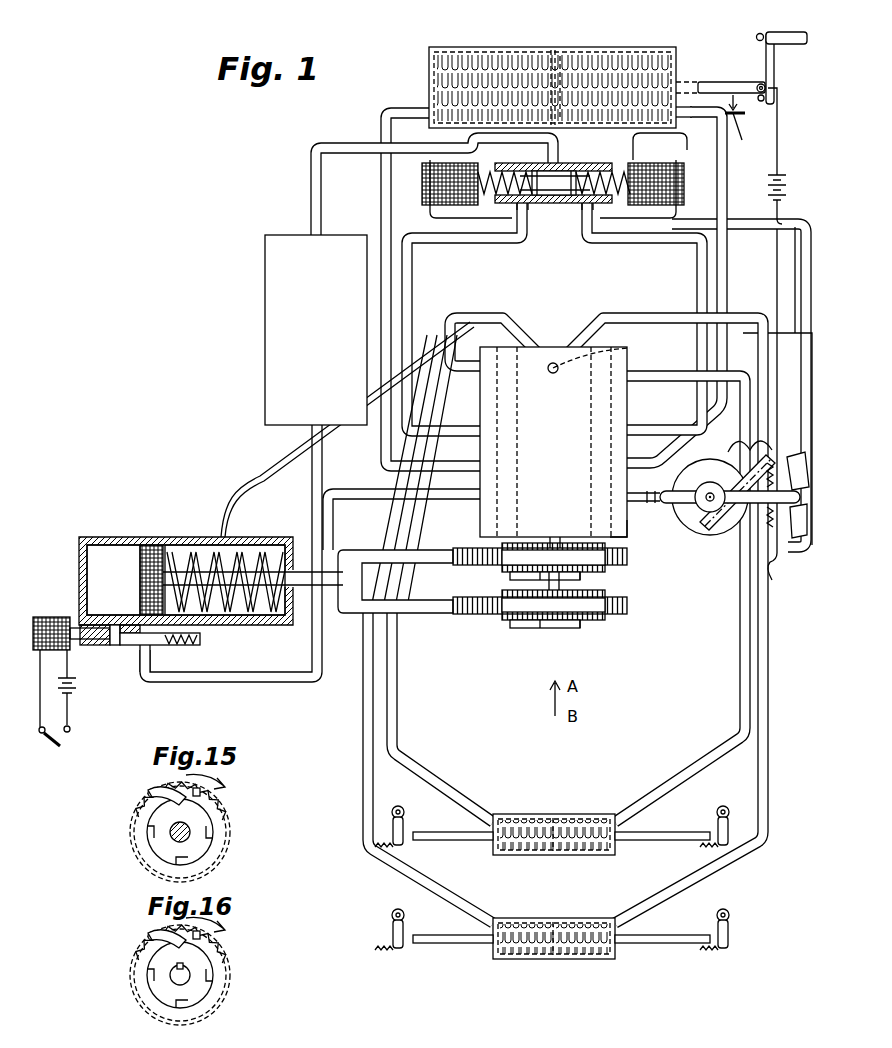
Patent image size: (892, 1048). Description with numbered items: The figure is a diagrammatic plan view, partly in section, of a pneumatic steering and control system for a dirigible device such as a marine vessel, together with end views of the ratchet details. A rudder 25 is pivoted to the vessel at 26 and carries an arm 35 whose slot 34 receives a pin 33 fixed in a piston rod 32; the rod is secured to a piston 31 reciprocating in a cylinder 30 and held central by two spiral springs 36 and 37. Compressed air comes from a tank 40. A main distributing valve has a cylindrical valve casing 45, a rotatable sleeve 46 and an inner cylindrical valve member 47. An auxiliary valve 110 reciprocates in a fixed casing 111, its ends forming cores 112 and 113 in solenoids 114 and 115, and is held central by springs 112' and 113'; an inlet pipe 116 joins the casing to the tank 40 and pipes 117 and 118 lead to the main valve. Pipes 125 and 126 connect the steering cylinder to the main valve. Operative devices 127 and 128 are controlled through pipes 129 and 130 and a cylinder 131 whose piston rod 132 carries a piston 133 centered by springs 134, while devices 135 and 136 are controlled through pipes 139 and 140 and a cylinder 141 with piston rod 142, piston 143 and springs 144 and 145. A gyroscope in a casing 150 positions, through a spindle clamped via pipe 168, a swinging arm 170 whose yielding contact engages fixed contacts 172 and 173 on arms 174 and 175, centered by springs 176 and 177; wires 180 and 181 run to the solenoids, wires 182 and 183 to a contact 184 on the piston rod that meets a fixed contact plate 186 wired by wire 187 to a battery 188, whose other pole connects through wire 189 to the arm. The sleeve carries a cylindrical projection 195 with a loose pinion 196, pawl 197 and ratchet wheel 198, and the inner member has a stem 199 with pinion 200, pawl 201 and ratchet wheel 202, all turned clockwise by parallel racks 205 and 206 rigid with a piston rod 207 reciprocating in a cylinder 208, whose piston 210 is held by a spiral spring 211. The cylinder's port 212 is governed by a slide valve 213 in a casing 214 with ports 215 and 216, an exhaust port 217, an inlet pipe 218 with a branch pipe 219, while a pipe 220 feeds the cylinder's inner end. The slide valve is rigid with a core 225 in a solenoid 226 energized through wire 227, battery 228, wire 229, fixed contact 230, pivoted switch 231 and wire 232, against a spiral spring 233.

In FIG. 1, the rudder 25 is at (790, 32).
In FIG. 1, the pivot 26 is at (758, 34).
In FIG. 1, the cylinder 30 is at (597, 55).
In FIG. 1, the piston 31 is at (553, 55).
In FIG. 1, the piston rod 32 is at (712, 82).
In FIG. 1, the pin 33 is at (766, 88).
In FIG. 1, the slot 34 is at (765, 100).
In FIG. 1, the arm 35 is at (774, 63).
In FIG. 1, the spiral spring 36 is at (490, 60).
In FIG. 1, the spiral spring 37 is at (632, 65).
In FIG. 1, the tank 40 is at (316, 330).
In FIG. 1, the valve casing 45 is at (630, 532).
In FIG. 1, the sleeve 46 is at (630, 403).
In FIG. 1, the inner cylindrical valve member 47 is at (603, 352).
In FIG. 1, the auxiliary valve 110 is at (553, 185).
In FIG. 1, the auxiliary valve casing 111 is at (565, 172).
In FIG. 1, the core 112 is at (483, 211).
In FIG. 1, the spring 112' is at (503, 196).
In FIG. 1, the core 113 is at (606, 164).
In FIG. 1, the spring 113' is at (619, 209).
In FIG. 1, the solenoid 114 is at (430, 180).
In FIG. 1, the solenoid 115 is at (684, 178).
In FIG. 1, the inlet pipe 116 is at (392, 152).
In FIG. 1, the pipe 117 is at (470, 240).
In FIG. 1, the pipe 118 is at (630, 240).
In FIG. 1, the pipe 125 is at (382, 125).
In FIG. 1, the pipe 126 is at (727, 178).
In FIG. 1, the operative device 127 is at (405, 820).
In FIG. 1, the operative device 128 is at (717, 822).
In FIG. 1, the pipe 129 is at (462, 362).
In FIG. 1, the pipe 130 is at (662, 375).
In FIG. 1, the cylinder 131 is at (542, 815).
In FIG. 1, the piston rod 132 is at (476, 840).
In FIG. 1, the piston 133 is at (553, 855).
In FIG. 1, the springs 134 is at (520, 845).
In FIG. 1, the device 135 is at (394, 930).
In FIG. 1, the device 136 is at (728, 932).
In FIG. 1, the pipe 139 is at (580, 325).
In FIG. 1, the pipe 140 is at (523, 326).
In FIG. 1, the cylinder 141 is at (552, 920).
In FIG. 1, the piston rod 142 is at (464, 943).
In FIG. 1, the piston 143 is at (553, 960).
In FIG. 1, the spiral spring 144 is at (526, 950).
In FIG. 1, the spiral spring 145 is at (596, 950).
In FIG. 1, the casing 150 is at (708, 535).
In FIG. 1, the pipe 168 is at (648, 504).
In FIG. 1, the arm 170 is at (775, 580).
In FIG. 1, the fixed contact 172 is at (768, 445).
In FIG. 1, the fixed contact 173 is at (795, 540).
In FIG. 1, the arm 174 is at (674, 478).
In FIG. 1, the arm 175 is at (696, 508).
In FIG. 1, the spiral spring 176 is at (738, 450).
In FIG. 1, the spiral spring 177 is at (740, 500).
In FIG. 1, the wire 180 is at (795, 290).
In FIG. 1, the wire 181 is at (765, 335).
In FIG. 1, the wire 182 is at (702, 125).
In FIG. 1, the wire 183 is at (634, 155).
In FIG. 1, the contact 184 is at (747, 113).
In FIG. 1, the fixed contact plate 186 is at (744, 142).
In FIG. 1, the wire 187 is at (780, 174).
In FIG. 1, the battery 188 is at (775, 196).
In FIG. 1, the wire 189 is at (790, 252).
In FIG. 1, the cylindrical projection 195 is at (553, 545).
In FIG. 1, the pinion 196 is at (606, 568).
In FIG. 15, the pinion 196 is at (231, 831).
In FIG. 1, the pawl 197 is at (510, 576).
In FIG. 15, the pawl 197 is at (148, 800).
In FIG. 1, the ratchet wheel 198 is at (580, 578).
In FIG. 15, the ratchet wheel 198 is at (200, 818).
In FIG. 1, the stem 199 is at (600, 600).
In FIG. 15, the stem 199 is at (190, 838).
In FIG. 16, the stem 199 is at (170, 980).
In FIG. 1, the pinion 200 is at (606, 622).
In FIG. 16, the pinion 200 is at (230, 985).
In FIG. 1, the pawl 201 is at (536, 630).
In FIG. 16, the pawl 201 is at (148, 945).
In FIG. 1, the ratchet wheel 202 is at (572, 630).
In FIG. 16, the ratchet wheel 202 is at (200, 966).
In FIG. 1, the rack 205 is at (470, 556).
In FIG. 1, the rack 206 is at (478, 610).
In FIG. 1, the piston rod 207 is at (352, 613).
In FIG. 1, the cylinder 208 is at (268, 622).
In FIG. 1, the piston 210 is at (150, 550).
In FIG. 1, the spiral spring 211 is at (180, 553).
In FIG. 1, the port 212 is at (116, 640).
In FIG. 1, the slide valve 213 is at (100, 620).
In FIG. 1, the casing 214 is at (95, 647).
In FIG. 1, the port 215 is at (118, 648).
In FIG. 1, the port 216 is at (150, 655).
In FIG. 1, the exhaust port 217 is at (112, 648).
In FIG. 1, the inlet pipe 218 is at (312, 440).
In FIG. 1, the branch pipe 219 is at (355, 500).
In FIG. 1, the pipe 220 is at (438, 330).
In FIG. 1, the core 225 is at (72, 628).
In FIG. 1, the solenoid 226 is at (42, 617).
In FIG. 1, the wire 227 is at (52, 661).
In FIG. 1, the battery 228 is at (78, 688).
In FIG. 1, the wire 229 is at (70, 708).
In FIG. 1, the fixed contact 230 is at (71, 728).
In FIG. 1, the pivoted switch 231 is at (50, 748).
In FIG. 1, the wire 232 is at (50, 688).
In FIG. 1, the spiral spring 233 is at (190, 648).